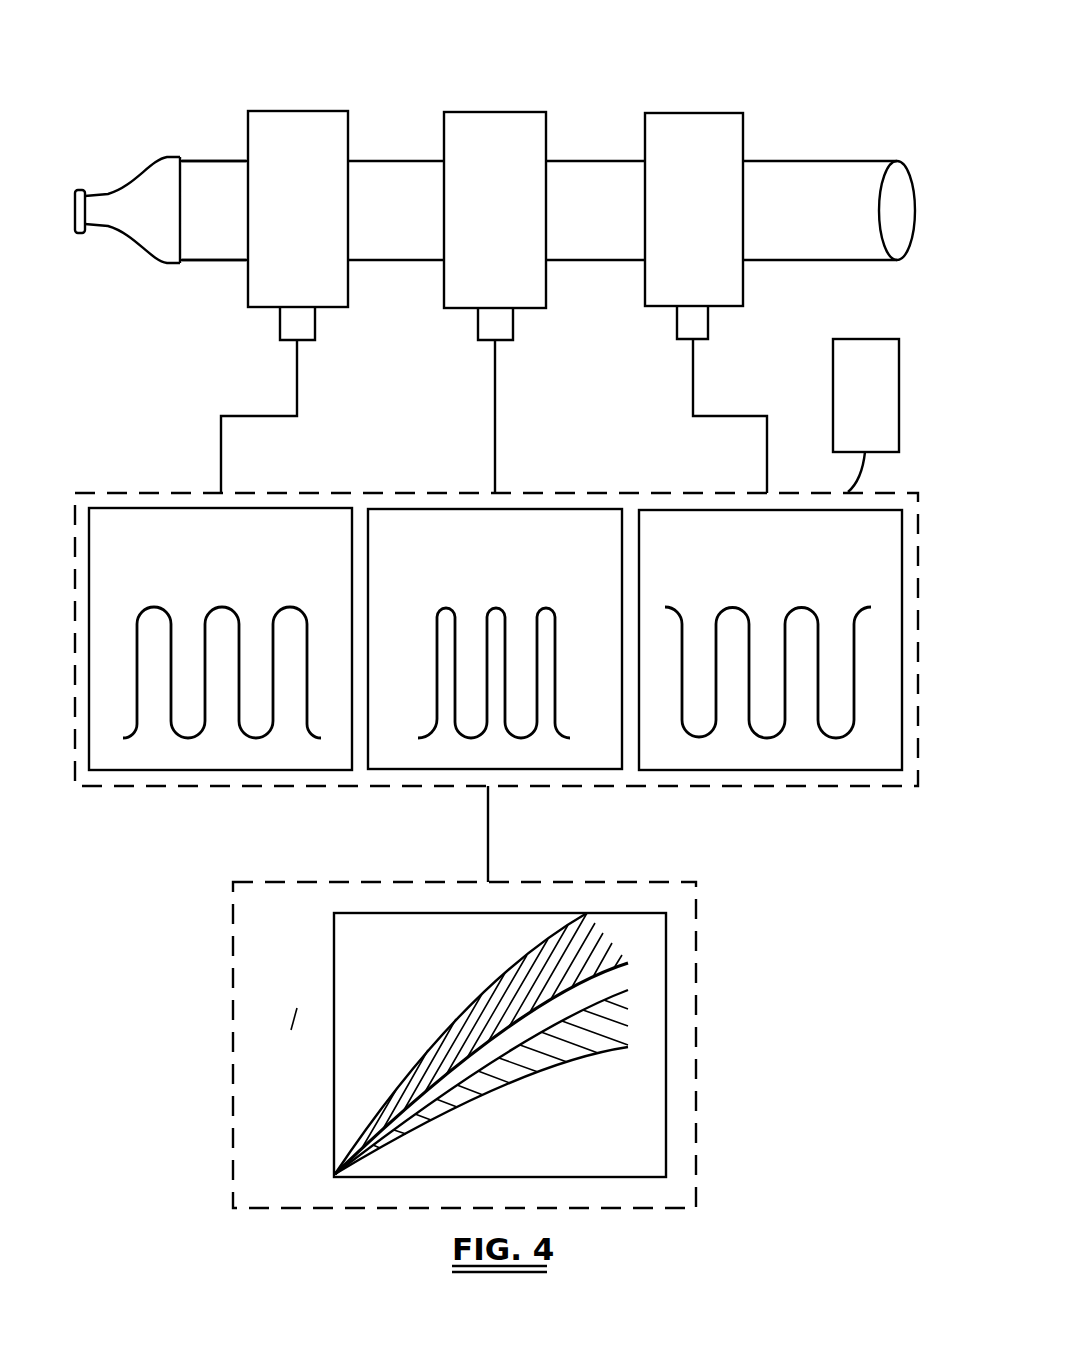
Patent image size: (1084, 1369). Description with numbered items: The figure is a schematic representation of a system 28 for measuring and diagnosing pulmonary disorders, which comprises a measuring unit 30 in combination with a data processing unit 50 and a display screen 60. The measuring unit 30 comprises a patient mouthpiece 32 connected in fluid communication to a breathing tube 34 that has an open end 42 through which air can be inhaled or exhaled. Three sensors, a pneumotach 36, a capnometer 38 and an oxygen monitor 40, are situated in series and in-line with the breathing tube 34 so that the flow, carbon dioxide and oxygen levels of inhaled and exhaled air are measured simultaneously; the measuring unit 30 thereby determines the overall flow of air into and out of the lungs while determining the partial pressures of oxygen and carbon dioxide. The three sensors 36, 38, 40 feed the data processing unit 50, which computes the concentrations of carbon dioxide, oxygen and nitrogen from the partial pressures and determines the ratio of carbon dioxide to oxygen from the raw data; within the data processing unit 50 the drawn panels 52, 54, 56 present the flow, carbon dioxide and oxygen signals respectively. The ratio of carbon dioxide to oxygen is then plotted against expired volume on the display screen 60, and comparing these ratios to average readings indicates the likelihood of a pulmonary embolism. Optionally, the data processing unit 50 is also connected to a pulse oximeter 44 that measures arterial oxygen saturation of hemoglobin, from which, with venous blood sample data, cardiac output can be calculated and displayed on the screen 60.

The system 28 is at (620, 84).
The measuring unit 30 is at (200, 134).
The patient mouthpiece 32 is at (157, 165).
The breathing tube 34 is at (218, 258).
The pneumotach 36 is at (302, 111).
The capnometer 38 is at (497, 112).
The oxygen monitor 40 is at (692, 113).
The open end 42 is at (908, 182).
The pulse oximeter 44 is at (881, 339).
The data processing unit 50 is at (190, 490).
The flow waveform display 52 is at (228, 507).
The CO2 waveform display 54 is at (513, 508).
The O2 waveform display 56 is at (655, 510).
The display screen 60 is at (697, 958).